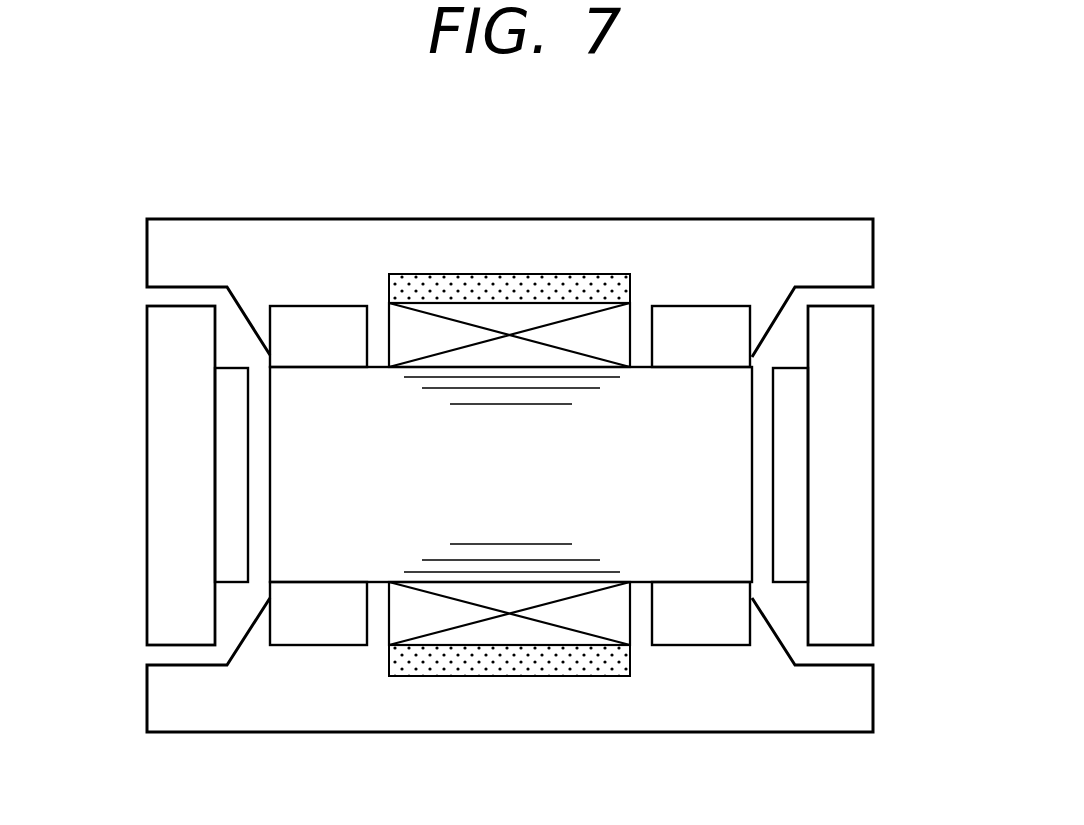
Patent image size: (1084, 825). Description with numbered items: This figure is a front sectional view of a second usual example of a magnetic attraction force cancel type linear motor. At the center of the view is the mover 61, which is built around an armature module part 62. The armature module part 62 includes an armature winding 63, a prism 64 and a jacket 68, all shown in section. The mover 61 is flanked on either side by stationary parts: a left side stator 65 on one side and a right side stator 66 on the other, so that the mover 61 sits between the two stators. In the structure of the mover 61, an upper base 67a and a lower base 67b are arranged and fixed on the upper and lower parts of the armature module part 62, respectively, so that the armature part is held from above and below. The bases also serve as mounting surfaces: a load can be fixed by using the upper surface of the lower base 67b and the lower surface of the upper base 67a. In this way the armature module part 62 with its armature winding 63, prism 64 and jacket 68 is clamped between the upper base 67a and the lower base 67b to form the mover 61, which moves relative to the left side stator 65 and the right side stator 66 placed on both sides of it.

The mover 61 is at (246, 216).
The armature module part 62 is at (717, 443).
The armature winding 63 is at (403, 620).
The prism 64 is at (298, 335).
The left side stator 65 is at (155, 604).
The right side stator 66 is at (877, 550).
The upper base 67a is at (807, 230).
The lower base 67b is at (735, 717).
The jacket 68 is at (492, 292).